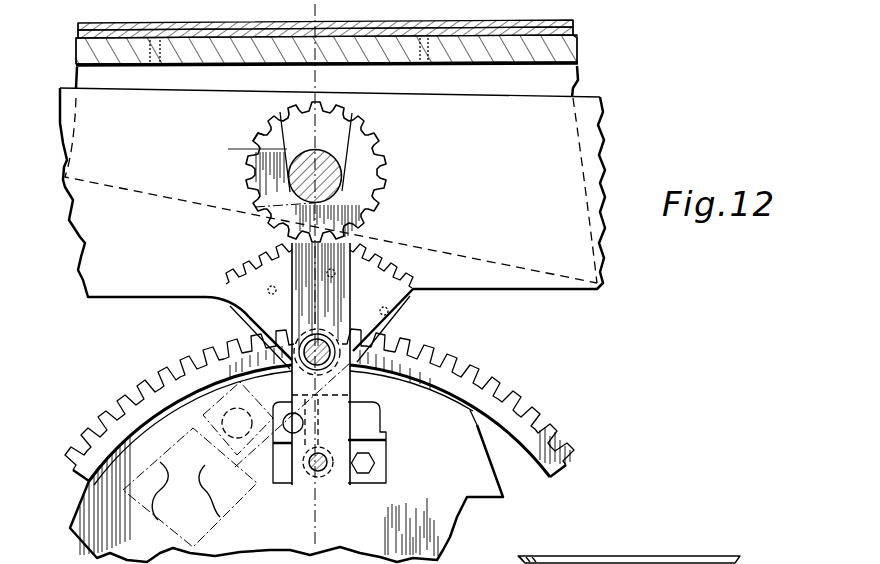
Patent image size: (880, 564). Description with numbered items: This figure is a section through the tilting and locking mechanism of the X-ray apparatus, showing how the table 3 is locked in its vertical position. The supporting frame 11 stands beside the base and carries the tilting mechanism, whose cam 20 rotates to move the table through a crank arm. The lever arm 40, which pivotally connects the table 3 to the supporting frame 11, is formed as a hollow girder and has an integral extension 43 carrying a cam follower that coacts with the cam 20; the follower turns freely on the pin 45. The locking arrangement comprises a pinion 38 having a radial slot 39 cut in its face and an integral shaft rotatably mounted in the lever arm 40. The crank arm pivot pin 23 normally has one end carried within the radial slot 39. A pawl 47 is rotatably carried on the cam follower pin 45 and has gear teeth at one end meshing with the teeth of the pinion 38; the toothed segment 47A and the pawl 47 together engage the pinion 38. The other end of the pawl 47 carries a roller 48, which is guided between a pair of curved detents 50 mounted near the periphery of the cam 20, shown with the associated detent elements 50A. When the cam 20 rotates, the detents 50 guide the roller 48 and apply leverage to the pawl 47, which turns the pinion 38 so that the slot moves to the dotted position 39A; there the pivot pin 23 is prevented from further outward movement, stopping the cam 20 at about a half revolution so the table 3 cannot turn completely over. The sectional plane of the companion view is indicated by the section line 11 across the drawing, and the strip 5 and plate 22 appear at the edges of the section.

The X-ray table 3 is at (606, 557).
The top cover strip 5 is at (550, 17).
The supporting frame 11 is at (270, 15).
The cam 20 is at (490, 468).
The sector gear 22 is at (507, 383).
The crank arm pivot pin 23 is at (332, 163).
The pinion 38 is at (389, 153).
The radial slot 39 is at (342, 122).
The radial slot in turned position 39A is at (258, 153).
The lever arm 40 is at (532, 290).
The integral extension 43 is at (376, 320).
The pin 45 is at (326, 320).
The pawl 47 is at (232, 276).
The right rack teeth 47A is at (403, 283).
The roller 48 is at (312, 473).
The curved detents 50 is at (375, 433).
The springs 50A is at (200, 454).